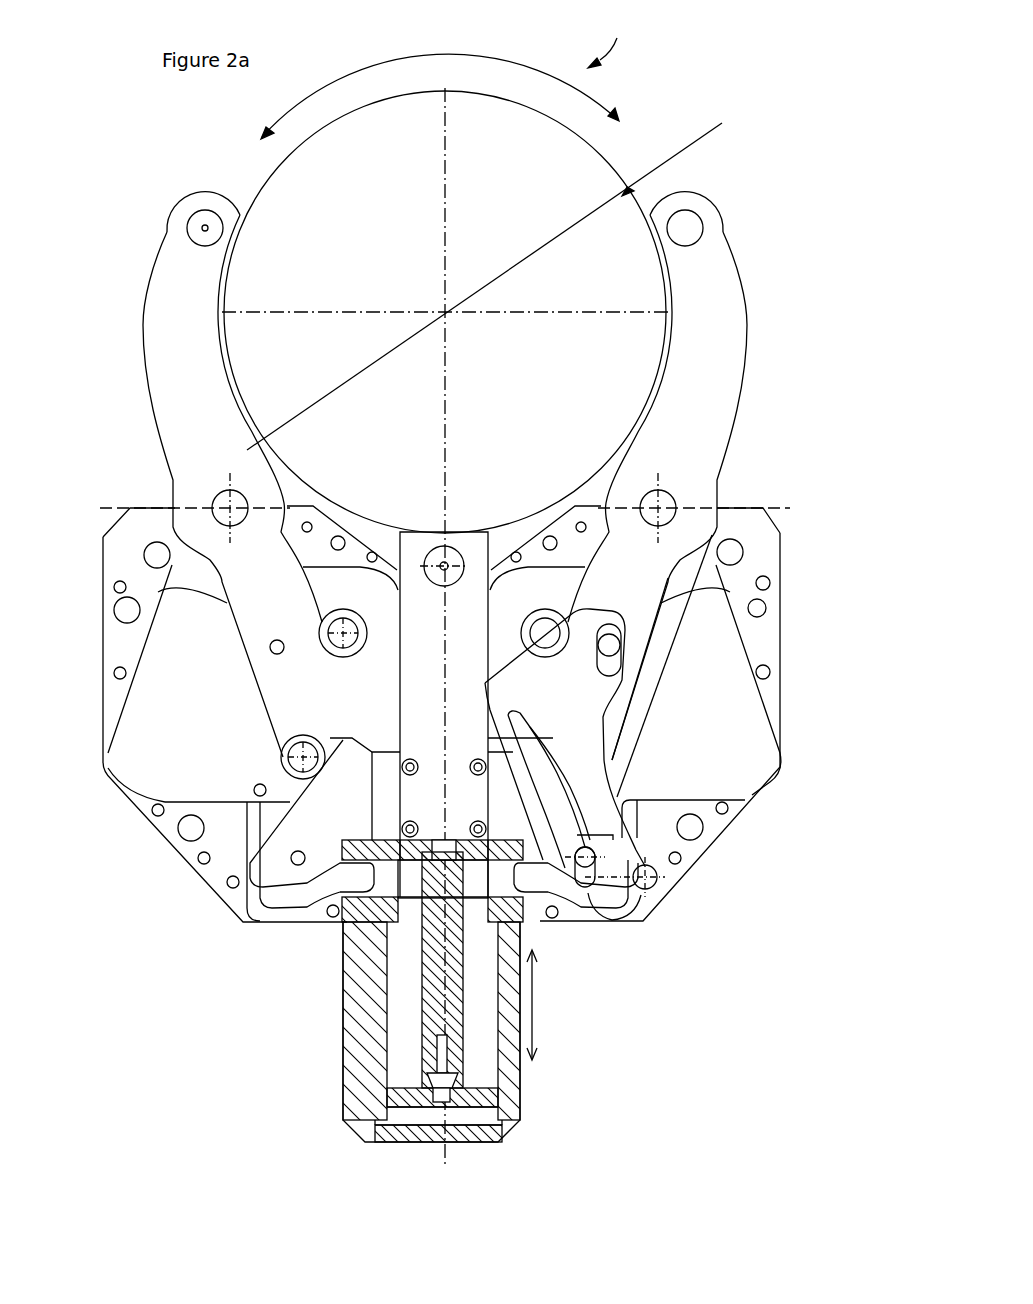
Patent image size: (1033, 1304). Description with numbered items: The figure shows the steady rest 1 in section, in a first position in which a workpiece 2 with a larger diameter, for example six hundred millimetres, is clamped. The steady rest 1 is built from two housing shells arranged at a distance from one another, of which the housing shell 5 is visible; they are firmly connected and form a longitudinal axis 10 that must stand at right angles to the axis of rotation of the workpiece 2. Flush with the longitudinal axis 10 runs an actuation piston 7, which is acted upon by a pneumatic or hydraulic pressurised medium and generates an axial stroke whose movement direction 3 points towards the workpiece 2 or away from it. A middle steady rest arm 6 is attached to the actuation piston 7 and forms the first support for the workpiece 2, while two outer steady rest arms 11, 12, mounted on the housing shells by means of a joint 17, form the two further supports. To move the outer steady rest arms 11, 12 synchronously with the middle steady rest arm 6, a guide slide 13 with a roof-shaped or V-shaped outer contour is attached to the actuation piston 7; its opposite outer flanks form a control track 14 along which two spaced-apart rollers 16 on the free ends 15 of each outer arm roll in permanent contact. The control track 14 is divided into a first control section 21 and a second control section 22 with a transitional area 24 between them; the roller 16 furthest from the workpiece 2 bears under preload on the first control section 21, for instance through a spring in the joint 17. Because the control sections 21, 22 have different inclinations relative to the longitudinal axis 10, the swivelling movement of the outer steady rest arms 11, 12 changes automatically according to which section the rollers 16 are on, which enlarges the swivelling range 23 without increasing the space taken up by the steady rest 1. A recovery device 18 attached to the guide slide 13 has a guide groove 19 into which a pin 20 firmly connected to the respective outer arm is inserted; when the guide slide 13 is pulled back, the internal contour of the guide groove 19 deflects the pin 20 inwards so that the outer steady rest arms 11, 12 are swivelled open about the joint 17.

The steady rest 1 is at (606, 39).
The workpiece 2 is at (568, 197).
The movement direction 3 is at (536, 1030).
The housing shell 5 is at (353, 912).
The middle steady rest arm 6 is at (417, 596).
The actuation piston 7 is at (400, 1095).
The longitudinal axis 10 is at (447, 718).
The outer steady rest arm 11 is at (707, 318).
The outer steady rest arm 12 is at (187, 377).
The guide slide 13 is at (308, 910).
The control track 14 is at (247, 802).
The free end 15 is at (330, 707).
The roller 16 is at (322, 620).
The joint 17 is at (213, 502).
The recovery device 18 is at (578, 685).
The guide groove 19 is at (596, 838).
The pin 20 is at (630, 640).
The first control section 21 is at (160, 808).
The second control section 22 is at (254, 788).
The swivelling range 23 is at (484, 57).
The transitional area 24 is at (330, 740).